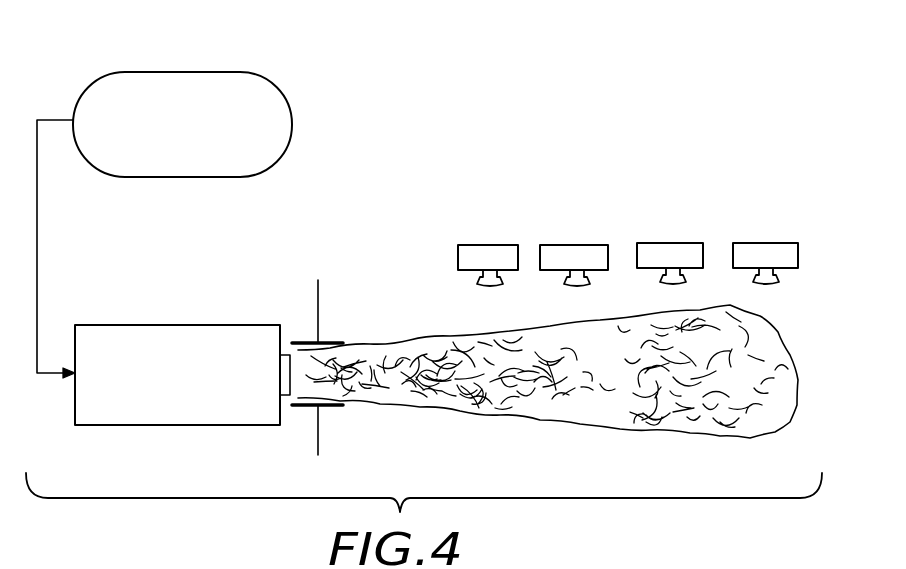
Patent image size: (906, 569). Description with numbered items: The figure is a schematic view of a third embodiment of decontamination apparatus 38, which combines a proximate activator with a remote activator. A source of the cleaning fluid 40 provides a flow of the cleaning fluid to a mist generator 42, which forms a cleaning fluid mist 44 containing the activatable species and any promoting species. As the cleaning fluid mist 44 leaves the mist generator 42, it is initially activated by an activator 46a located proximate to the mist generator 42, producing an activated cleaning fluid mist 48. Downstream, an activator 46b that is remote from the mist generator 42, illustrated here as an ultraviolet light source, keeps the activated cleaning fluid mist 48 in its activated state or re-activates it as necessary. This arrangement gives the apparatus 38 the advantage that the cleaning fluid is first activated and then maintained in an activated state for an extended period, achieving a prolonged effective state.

The decontamination apparatus 38 is at (346, 69).
The source of the cleaning fluid 40 is at (199, 72).
The mist generator 42 is at (211, 325).
The cleaning fluid mist 44 is at (290, 342).
The activator 46a is at (330, 333).
The activator 46b is at (548, 245).
The activated cleaning fluid mist 48 is at (665, 392).